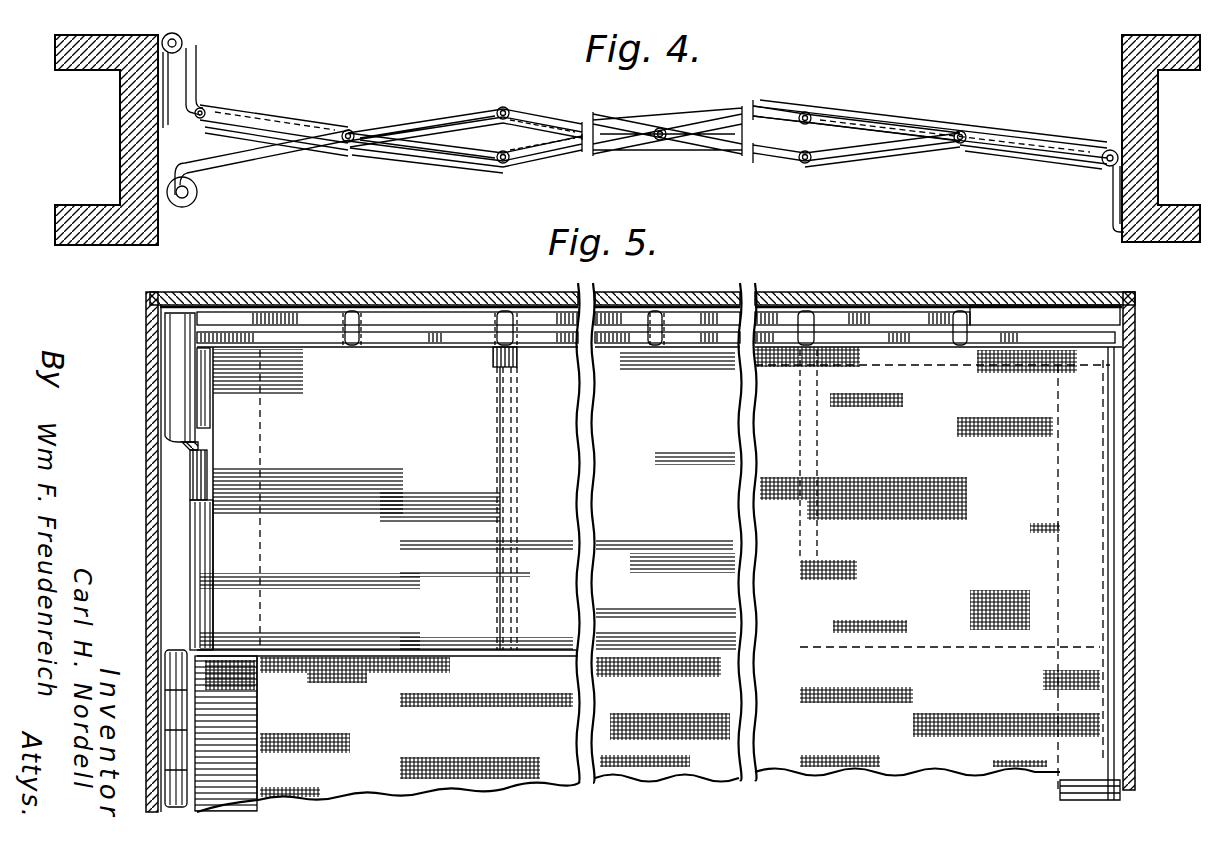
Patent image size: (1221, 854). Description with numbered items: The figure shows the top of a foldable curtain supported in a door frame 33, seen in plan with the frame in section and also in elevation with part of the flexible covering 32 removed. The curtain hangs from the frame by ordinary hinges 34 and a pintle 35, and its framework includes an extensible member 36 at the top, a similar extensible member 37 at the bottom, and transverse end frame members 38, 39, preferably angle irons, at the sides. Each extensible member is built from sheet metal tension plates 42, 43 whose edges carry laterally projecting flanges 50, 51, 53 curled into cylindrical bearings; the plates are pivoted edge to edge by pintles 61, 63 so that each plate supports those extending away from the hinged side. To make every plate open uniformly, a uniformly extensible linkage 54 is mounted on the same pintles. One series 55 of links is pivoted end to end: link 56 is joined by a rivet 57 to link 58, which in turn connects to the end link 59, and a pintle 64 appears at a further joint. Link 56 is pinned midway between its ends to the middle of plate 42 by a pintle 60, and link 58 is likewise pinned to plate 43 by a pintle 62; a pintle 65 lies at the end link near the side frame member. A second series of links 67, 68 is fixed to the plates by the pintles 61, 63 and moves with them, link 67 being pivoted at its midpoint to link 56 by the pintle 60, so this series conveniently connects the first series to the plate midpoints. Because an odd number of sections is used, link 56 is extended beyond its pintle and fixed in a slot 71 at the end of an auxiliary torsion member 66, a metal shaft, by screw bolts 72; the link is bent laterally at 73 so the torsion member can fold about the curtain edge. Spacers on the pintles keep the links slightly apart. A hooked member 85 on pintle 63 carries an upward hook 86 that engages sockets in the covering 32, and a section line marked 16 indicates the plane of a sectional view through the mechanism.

In FIG. 5, the flexible covering 32 is at (934, 573).
In FIG. 4, the door frame 33 is at (125, 110).
In FIG. 4, the hinge 34 is at (163, 78).
In FIG. 5, the hinge 34 is at (170, 668).
In FIG. 5, the pintle 35 is at (203, 460).
In FIG. 5, the extensible member 36 is at (628, 547).
In FIG. 5, the extensible member 37 is at (659, 501).
In FIG. 5, the end frame member 38 is at (240, 723).
In FIG. 5, the end frame member 39 is at (1057, 749).
In FIG. 4, the tension plate 42 is at (302, 132).
In FIG. 5, the tension plate 42 is at (287, 357).
In FIG. 4, the tension plate 43 is at (557, 160).
In FIG. 5, the tension plate 43 is at (560, 380).
In FIG. 5, the flange 50 is at (203, 412).
In FIG. 5, the flange 51 is at (508, 545).
In FIG. 5, the flange 53 is at (503, 622).
In FIG. 4, the uniformly extensible linkage 54 is at (676, 112).
In FIG. 5, the uniformly extensible linkage 54 is at (627, 320).
In FIG. 4, the series of extensible links 55 is at (282, 158).
In FIG. 4, the link 56 is at (415, 127).
In FIG. 5, the link 56 is at (407, 317).
In FIG. 4, the rivet 57 is at (503, 107).
In FIG. 4, the link 58 is at (550, 118).
In FIG. 4, the link 59 is at (863, 153).
In FIG. 4, the pintle 60 is at (349, 130).
In FIG. 5, the pintle 60 is at (352, 313).
In FIG. 4, the pintle 61 is at (505, 163).
In FIG. 5, the pintle 61 is at (505, 313).
In FIG. 4, the pintle 62 is at (655, 310).
In FIG. 5, the pintle 63 is at (787, 257).
In FIG. 4, the pivot pin 64 is at (807, 163).
In FIG. 4, the pintle 65 is at (977, 293).
In FIG. 5, the pintle 65 is at (970, 305).
In FIG. 4, the auxiliary torsion member 66 is at (197, 198).
In FIG. 4, the link 67 is at (467, 162).
In FIG. 5, the link 67 is at (440, 337).
In FIG. 4, the link 68 is at (532, 162).
In FIG. 4, the slot 71 is at (188, 207).
In FIG. 4, the screw bolt 72 is at (177, 188).
In FIG. 4, the lateral bend 73 is at (187, 168).
In FIG. 5, the hooked member 85 is at (515, 355).
In FIG. 5, the hook 86 is at (497, 367).
In FIG. 4, the section line 16- 16 is at (782, 87).
In FIG. 5, the section line 16- 16 is at (783, 277).